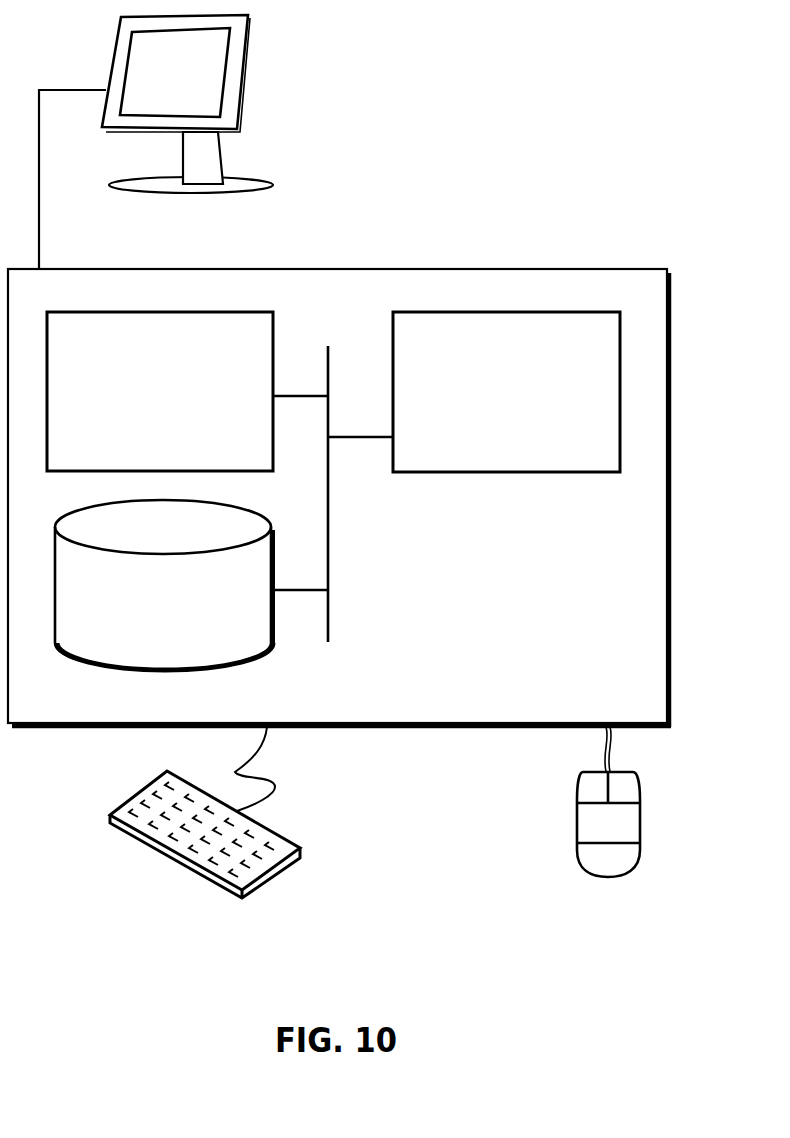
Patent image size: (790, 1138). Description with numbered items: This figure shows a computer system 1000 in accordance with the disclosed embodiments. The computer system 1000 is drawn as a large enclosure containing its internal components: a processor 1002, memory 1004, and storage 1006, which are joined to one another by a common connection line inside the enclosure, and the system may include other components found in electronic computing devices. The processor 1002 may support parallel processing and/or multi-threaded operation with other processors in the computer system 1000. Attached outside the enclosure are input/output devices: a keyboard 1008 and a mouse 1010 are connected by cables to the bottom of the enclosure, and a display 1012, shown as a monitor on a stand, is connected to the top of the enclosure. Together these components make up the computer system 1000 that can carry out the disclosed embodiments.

The computer system 1000 is at (383, 248).
The processor 1002 is at (539, 404).
The memory 1004 is at (188, 404).
The storage 1006 is at (195, 616).
The keyboard 1008 is at (130, 835).
The mouse 1010 is at (608, 802).
The display 1012 is at (156, 142).